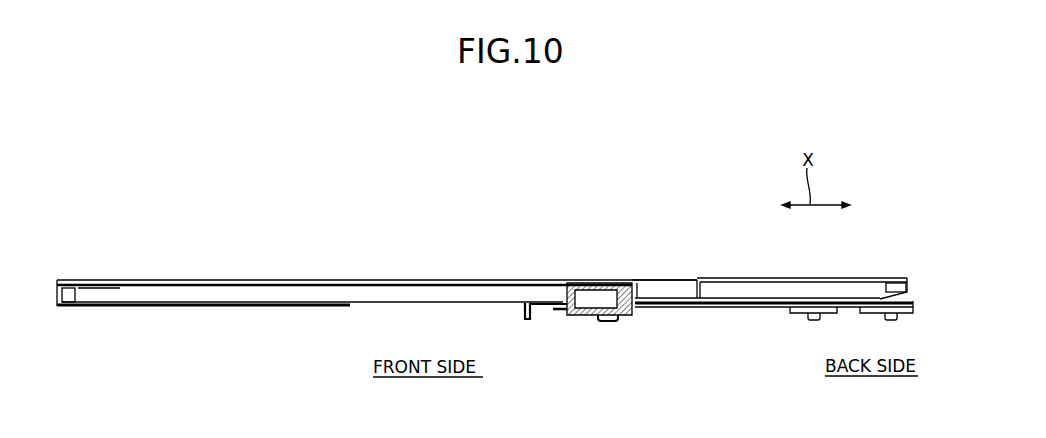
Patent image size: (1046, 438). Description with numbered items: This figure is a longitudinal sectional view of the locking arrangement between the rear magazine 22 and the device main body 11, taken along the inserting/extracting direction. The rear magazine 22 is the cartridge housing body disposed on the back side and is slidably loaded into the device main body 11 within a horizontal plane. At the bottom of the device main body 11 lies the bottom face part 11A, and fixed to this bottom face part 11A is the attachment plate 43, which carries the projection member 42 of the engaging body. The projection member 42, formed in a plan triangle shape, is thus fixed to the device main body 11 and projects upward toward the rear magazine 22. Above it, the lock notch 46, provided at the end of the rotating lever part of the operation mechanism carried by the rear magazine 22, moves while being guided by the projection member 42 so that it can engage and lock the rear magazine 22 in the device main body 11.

The device main body 11 is at (720, 308).
The bottom face part 11A is at (543, 290).
The rear magazine 22 is at (214, 281).
The projection member 42 is at (647, 282).
The attachment plate 43 is at (577, 320).
The lock notch 46 is at (682, 291).